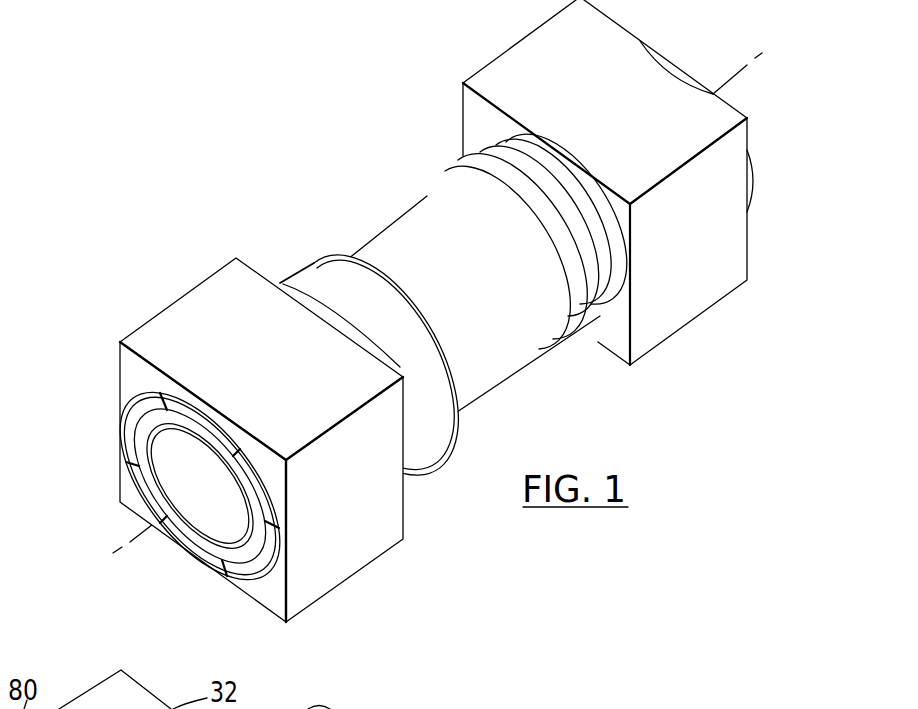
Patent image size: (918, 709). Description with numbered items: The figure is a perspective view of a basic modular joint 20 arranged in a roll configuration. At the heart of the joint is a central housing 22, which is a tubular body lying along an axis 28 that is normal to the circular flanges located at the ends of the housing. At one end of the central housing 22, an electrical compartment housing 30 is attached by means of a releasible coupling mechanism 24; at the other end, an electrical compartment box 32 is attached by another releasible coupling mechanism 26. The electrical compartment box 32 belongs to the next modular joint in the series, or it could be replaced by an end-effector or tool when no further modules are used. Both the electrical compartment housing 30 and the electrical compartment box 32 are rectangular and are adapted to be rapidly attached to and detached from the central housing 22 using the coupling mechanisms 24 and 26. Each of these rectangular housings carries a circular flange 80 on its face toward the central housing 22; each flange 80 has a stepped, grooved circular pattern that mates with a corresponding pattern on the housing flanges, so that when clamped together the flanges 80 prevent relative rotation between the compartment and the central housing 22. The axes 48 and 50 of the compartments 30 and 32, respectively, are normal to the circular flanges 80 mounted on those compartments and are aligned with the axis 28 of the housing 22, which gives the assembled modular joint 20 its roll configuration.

The modular joint 20 is at (55, 292).
The central housing 22 is at (512, 352).
The releasible coupling mechanism 24 is at (291, 293).
The releasible coupling mechanism 26 is at (505, 143).
The axis of housing 28 is at (397, 276).
The electrical compartment housing 30 is at (165, 302).
The electrical compartment box 32 is at (682, 333).
The axis of compartment 48 is at (133, 540).
The axis of compartment 50 is at (738, 72).
The circular flange 80 is at (240, 567).